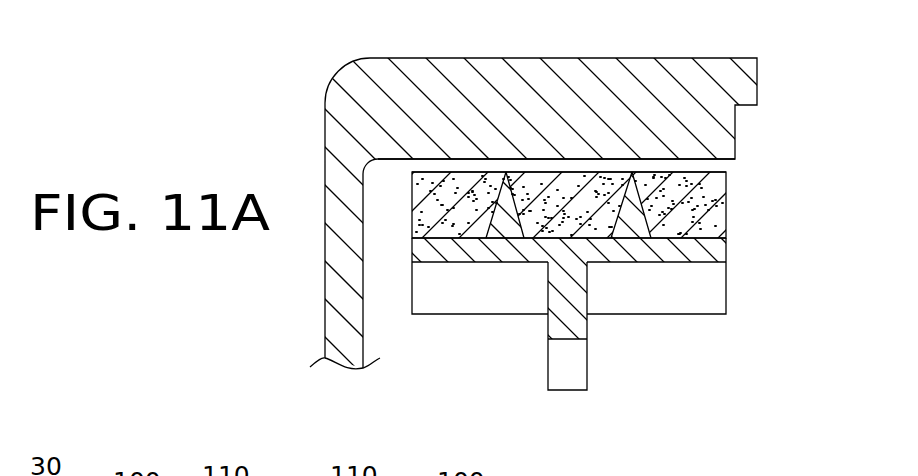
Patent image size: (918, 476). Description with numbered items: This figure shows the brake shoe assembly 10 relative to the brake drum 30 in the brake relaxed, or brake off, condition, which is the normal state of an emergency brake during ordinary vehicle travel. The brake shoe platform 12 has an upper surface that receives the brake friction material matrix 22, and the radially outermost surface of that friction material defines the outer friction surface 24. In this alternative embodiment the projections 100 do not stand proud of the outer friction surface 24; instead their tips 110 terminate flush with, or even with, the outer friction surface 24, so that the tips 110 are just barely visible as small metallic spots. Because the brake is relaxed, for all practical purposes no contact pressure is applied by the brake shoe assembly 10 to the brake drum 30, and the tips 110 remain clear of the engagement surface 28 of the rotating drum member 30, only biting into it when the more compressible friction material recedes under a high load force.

The brake shoe assembly 10 is at (678, 340).
The brake shoe platform 12 is at (727, 251).
The brake friction material matrix 22 is at (717, 216).
The outer friction surface 24 is at (710, 158).
The engagement surface 28 is at (728, 172).
The brake drum 30 is at (322, 310).
The projections 100 is at (445, 158).
The tips 110 is at (506, 172).